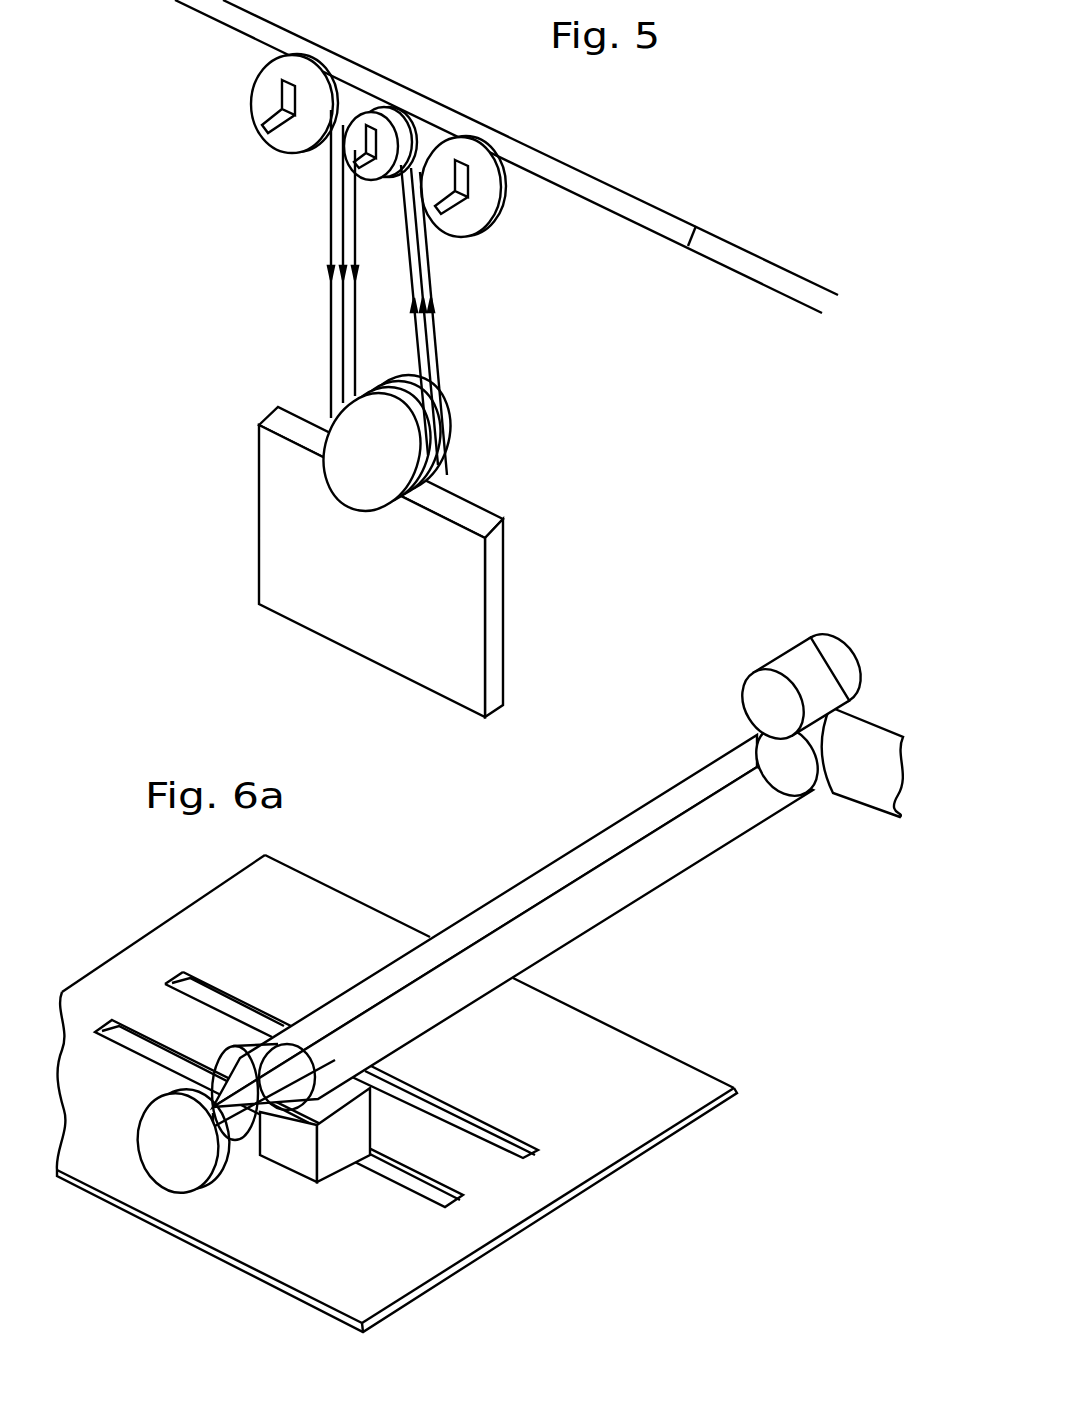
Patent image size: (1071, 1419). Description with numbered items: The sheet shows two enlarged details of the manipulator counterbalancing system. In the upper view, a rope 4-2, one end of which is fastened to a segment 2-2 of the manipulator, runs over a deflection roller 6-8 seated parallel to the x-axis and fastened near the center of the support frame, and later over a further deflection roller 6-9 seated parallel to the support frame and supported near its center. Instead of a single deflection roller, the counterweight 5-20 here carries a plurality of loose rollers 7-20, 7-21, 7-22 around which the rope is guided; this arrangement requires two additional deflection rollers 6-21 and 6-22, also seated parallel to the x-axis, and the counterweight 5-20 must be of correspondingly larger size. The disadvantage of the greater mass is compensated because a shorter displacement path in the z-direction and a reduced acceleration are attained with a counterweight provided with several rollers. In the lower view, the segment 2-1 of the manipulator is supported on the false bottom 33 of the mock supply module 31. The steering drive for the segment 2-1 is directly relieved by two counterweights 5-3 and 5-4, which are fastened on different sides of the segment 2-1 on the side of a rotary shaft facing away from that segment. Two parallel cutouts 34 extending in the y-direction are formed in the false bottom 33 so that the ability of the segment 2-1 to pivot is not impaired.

In FIG. 5, the rope 4-2 is at (683, 217).
In FIG. 5, the deflection roller 6-8 is at (262, 101).
In FIG. 5, the deflection roller 6-9 is at (478, 228).
In FIG. 5, the additional deflection roller 6-21 is at (362, 147).
In FIG. 5, the additional deflection roller 6-22 is at (400, 117).
In FIG. 5, the loose roller 7-20 is at (360, 485).
In FIG. 5, the loose roller 7-21 is at (410, 405).
In FIG. 5, the loose roller 7-22 is at (408, 385).
In FIG. 5, the counterweight 5-20 is at (262, 455).
In FIG. 6A, the segment 2-1 is at (680, 855).
In FIG. 6A, the segment 2-2 is at (853, 790).
In FIG. 6A, the mock supply module 31 is at (682, 1146).
In FIG. 6A, the false bottom 33 is at (640, 1065).
In FIG. 6A, the cutouts 34 is at (165, 980).
In FIG. 6A, the counterweight 5-3 is at (222, 1168).
In FIG. 6A, the counterweight 5-4 is at (232, 1067).